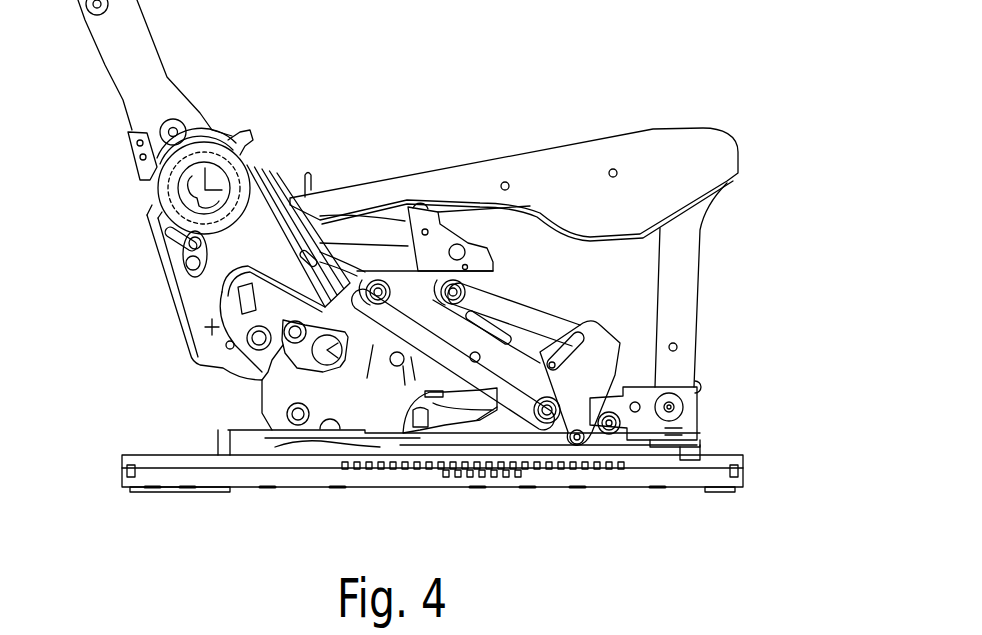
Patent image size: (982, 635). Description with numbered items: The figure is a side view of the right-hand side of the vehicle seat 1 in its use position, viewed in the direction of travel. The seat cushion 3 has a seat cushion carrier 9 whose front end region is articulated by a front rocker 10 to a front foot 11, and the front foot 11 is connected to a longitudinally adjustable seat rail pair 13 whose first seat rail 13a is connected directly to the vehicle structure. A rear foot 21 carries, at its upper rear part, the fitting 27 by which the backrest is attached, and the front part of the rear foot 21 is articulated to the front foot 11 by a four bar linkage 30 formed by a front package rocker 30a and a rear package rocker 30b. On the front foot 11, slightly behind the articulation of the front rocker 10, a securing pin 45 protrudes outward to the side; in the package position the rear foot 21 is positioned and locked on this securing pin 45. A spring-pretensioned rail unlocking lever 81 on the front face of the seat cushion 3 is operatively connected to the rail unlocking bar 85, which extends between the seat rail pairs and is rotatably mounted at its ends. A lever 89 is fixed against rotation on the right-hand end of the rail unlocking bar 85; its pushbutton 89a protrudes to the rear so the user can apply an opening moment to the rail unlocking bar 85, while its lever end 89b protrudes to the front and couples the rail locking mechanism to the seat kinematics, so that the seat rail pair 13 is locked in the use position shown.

The vehicle seat 1 is at (490, 106).
The seat cushion 3 is at (738, 221).
The seat cushion carrier 9 is at (665, 150).
The front rocker 10 is at (677, 270).
The front foot 11 is at (645, 445).
The seat rail pair 13 is at (755, 465).
The first seat rail 13a is at (148, 463).
The rear foot 21 is at (283, 396).
The fitting 27 is at (173, 192).
The four bar linkage 30 is at (507, 293).
The front package rocker 30a is at (523, 332).
The rear package rocker 30b is at (413, 312).
The securing pin 45 is at (643, 403).
The rail unlocking lever 81 is at (703, 386).
The rail unlocking bar 85 is at (547, 445).
The lever 89 is at (500, 435).
The pushbutton 89a is at (425, 440).
The lever end 89b is at (590, 458).